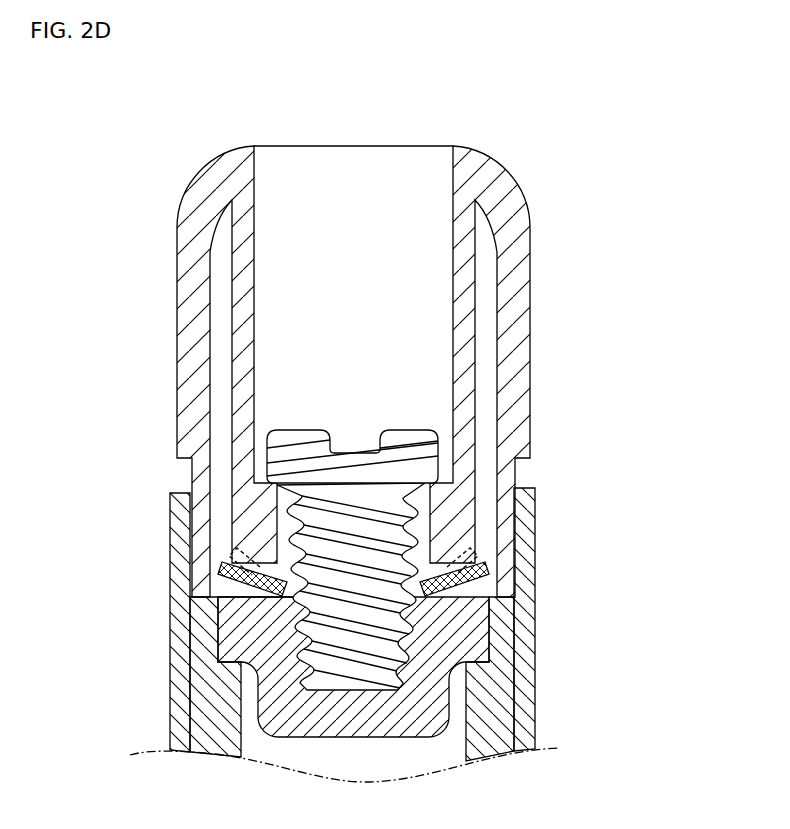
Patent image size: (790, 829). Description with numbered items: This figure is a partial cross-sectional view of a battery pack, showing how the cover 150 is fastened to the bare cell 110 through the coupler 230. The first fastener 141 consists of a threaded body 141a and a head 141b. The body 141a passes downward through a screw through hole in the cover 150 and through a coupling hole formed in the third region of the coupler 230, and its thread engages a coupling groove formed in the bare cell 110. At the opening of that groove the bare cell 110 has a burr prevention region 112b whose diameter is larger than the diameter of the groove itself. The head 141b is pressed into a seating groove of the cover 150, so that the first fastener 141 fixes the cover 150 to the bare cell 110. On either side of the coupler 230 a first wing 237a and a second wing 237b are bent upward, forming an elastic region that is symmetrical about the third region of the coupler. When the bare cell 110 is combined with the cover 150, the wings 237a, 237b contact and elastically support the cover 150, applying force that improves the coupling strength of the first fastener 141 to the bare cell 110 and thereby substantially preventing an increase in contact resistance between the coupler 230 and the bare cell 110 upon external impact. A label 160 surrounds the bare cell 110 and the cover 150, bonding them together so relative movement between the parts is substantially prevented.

The bare cell 110 is at (545, 730).
The burr prevention region 112b is at (292, 597).
The first fastener 141 is at (482, 560).
The body 141a is at (393, 534).
The head 141b is at (405, 456).
The cover 150 is at (500, 197).
The label 160 is at (535, 638).
The coupler 230 is at (377, 592).
The first wing 237a is at (222, 559).
The second wing 237b is at (483, 580).